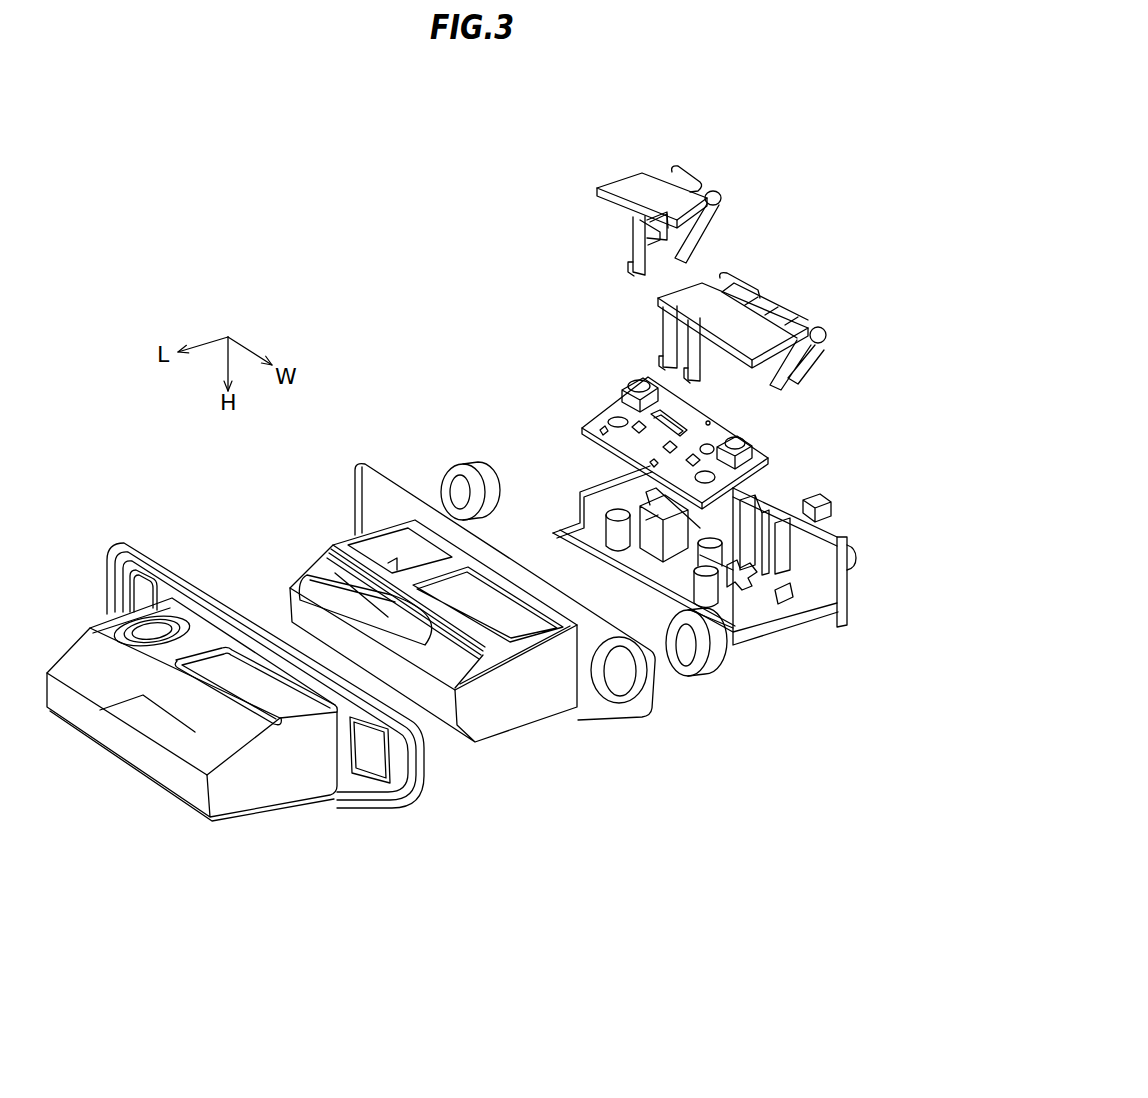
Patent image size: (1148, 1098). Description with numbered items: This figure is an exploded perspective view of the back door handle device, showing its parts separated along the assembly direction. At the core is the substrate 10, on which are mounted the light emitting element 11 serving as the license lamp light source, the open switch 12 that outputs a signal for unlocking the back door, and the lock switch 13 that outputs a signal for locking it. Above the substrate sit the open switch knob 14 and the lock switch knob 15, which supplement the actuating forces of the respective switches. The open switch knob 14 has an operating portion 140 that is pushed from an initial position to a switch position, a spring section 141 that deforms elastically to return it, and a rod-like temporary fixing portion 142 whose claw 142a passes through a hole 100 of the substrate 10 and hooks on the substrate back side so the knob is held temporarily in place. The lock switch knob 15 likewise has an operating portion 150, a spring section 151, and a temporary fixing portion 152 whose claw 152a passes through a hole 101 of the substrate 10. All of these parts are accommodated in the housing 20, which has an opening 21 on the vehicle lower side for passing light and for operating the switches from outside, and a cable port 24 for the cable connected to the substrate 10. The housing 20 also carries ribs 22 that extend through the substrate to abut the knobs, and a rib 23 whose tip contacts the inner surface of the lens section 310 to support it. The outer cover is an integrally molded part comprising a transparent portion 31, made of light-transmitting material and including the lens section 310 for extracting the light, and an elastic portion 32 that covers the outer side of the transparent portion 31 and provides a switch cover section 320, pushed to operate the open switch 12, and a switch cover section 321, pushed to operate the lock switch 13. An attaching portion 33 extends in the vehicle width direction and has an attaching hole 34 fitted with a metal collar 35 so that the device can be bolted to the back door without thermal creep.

The substrate 10 is at (588, 416).
The light emitting element 11 is at (592, 438).
The open switch 12 is at (750, 440).
The lock switch 13 is at (627, 383).
The open switch knob 14 is at (766, 274).
The lock switch knob 15 is at (612, 172).
The housing 20 is at (782, 643).
The opening 21 is at (784, 574).
The ribs 22 is at (686, 519).
The rib 23 is at (700, 593).
The cable port 24 is at (832, 518).
The transparent portion 31 is at (557, 735).
The elastic portion 32 is at (315, 822).
The attaching portion 33 is at (629, 718).
The attaching hole 34 is at (636, 682).
The metal collar 35 is at (452, 475).
The hole 100 is at (712, 446).
The hole 101 is at (660, 421).
The operating portion 140 is at (746, 322).
The spring section 141 is at (792, 370).
The temporary fixing portion 142 is at (672, 337).
The claw 142a is at (665, 360).
The operating portion 150 is at (627, 195).
The spring section 151 is at (700, 187).
The temporary fixing portion 152 is at (637, 235).
The claw 152a is at (631, 268).
The lens section 310 is at (330, 580).
The switch cover section 320 is at (262, 700).
The switch cover section 321 is at (153, 633).